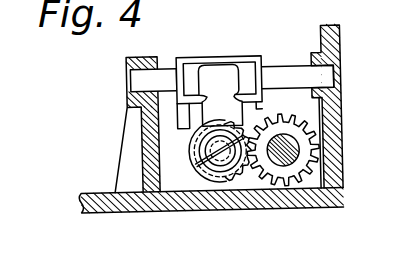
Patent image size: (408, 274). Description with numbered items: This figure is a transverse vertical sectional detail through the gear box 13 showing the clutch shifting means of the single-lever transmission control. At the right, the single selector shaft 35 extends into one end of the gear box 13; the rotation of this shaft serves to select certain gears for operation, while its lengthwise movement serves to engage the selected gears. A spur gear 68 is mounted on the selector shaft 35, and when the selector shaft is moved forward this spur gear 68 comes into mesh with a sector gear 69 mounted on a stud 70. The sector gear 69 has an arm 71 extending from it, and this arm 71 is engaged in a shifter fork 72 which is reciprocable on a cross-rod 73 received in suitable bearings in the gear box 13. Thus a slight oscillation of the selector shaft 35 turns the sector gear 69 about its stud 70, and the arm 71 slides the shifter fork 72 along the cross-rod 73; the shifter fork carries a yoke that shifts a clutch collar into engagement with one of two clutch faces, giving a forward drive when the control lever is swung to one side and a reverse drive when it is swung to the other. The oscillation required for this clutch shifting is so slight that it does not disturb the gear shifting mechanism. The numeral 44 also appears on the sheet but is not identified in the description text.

The gear box 13 is at (338, 34).
The housing frame 44 is at (209, 106).
The cross-rod 73 is at (275, 71).
The shifter fork 72 is at (246, 68).
The arm 71 is at (234, 111).
The sector gear 69 is at (251, 170).
The stud 70 is at (198, 158).
The spur gear 68 is at (291, 130).
The selector shaft 35 is at (300, 143).